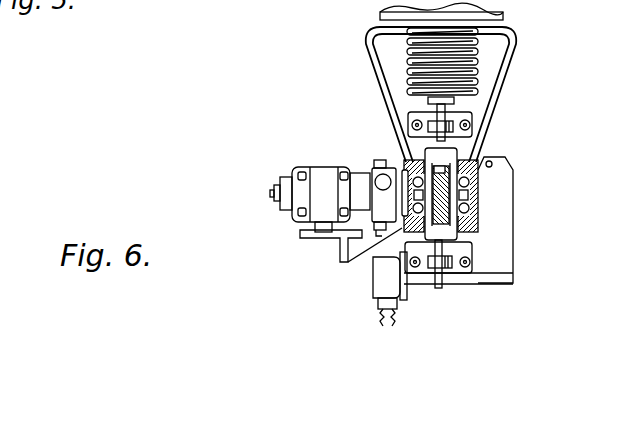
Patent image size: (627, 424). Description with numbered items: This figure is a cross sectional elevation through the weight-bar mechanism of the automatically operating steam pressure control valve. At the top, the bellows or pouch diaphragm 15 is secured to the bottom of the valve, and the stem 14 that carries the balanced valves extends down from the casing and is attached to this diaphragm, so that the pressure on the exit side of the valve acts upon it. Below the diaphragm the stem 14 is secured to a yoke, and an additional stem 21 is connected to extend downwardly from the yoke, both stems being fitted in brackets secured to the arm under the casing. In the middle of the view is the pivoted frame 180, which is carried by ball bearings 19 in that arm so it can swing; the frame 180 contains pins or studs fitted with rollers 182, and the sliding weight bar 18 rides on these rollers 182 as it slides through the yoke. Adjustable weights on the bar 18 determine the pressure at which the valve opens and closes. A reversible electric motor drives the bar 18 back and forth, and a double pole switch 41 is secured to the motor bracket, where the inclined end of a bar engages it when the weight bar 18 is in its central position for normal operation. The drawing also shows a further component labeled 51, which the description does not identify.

The stem 14 is at (437, 110).
The bellows or pouch diaphragm 15 is at (463, 59).
The sliding weight bar 18 is at (472, 214).
The ball bearings 19 is at (404, 168).
The additional stem 21 is at (440, 290).
The double pole switch 41 is at (373, 282).
The motor 51 is at (345, 166).
The frame 180 is at (450, 201).
The rollers 182 is at (441, 160).